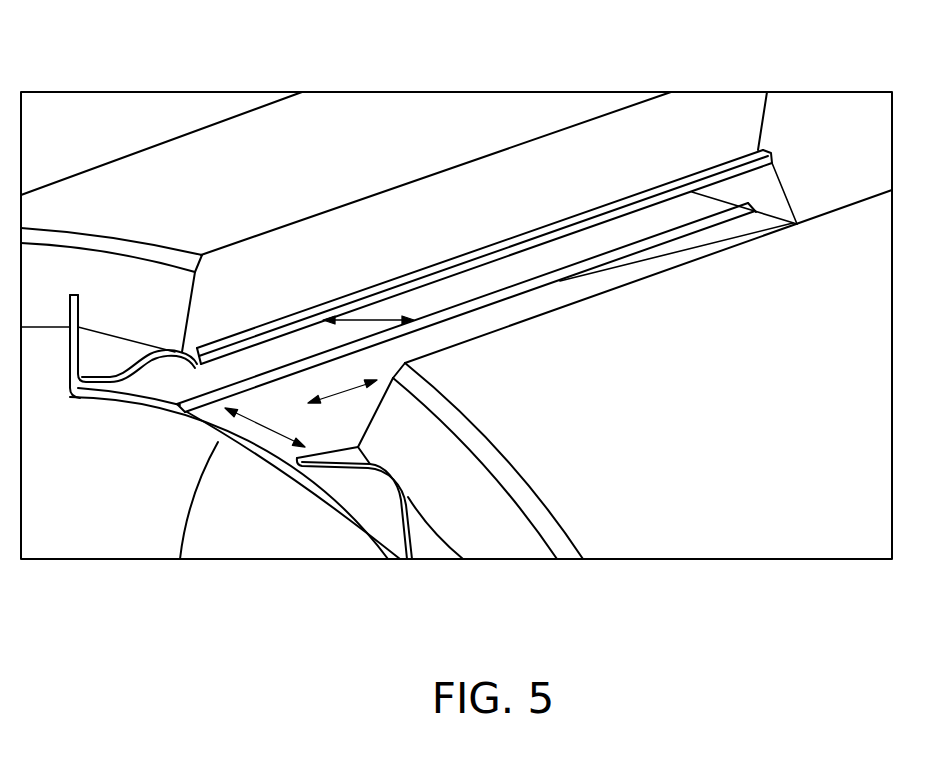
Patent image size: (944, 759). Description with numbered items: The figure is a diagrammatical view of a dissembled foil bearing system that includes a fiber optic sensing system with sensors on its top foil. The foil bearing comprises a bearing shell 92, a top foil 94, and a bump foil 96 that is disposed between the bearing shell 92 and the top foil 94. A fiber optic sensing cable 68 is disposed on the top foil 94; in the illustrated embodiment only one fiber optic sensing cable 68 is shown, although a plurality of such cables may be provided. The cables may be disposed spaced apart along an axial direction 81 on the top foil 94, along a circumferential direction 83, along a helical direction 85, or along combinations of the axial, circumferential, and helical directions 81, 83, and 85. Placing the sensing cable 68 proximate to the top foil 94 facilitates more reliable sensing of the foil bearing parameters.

The bearing shell 92 is at (392, 102).
The fiber optic sensing cable 68 is at (750, 200).
The helical direction 85 is at (370, 320).
The axial direction 81 is at (370, 392).
The circumferential direction 83 is at (270, 433).
The top foil 94 is at (138, 408).
The bump foil 96 is at (408, 527).